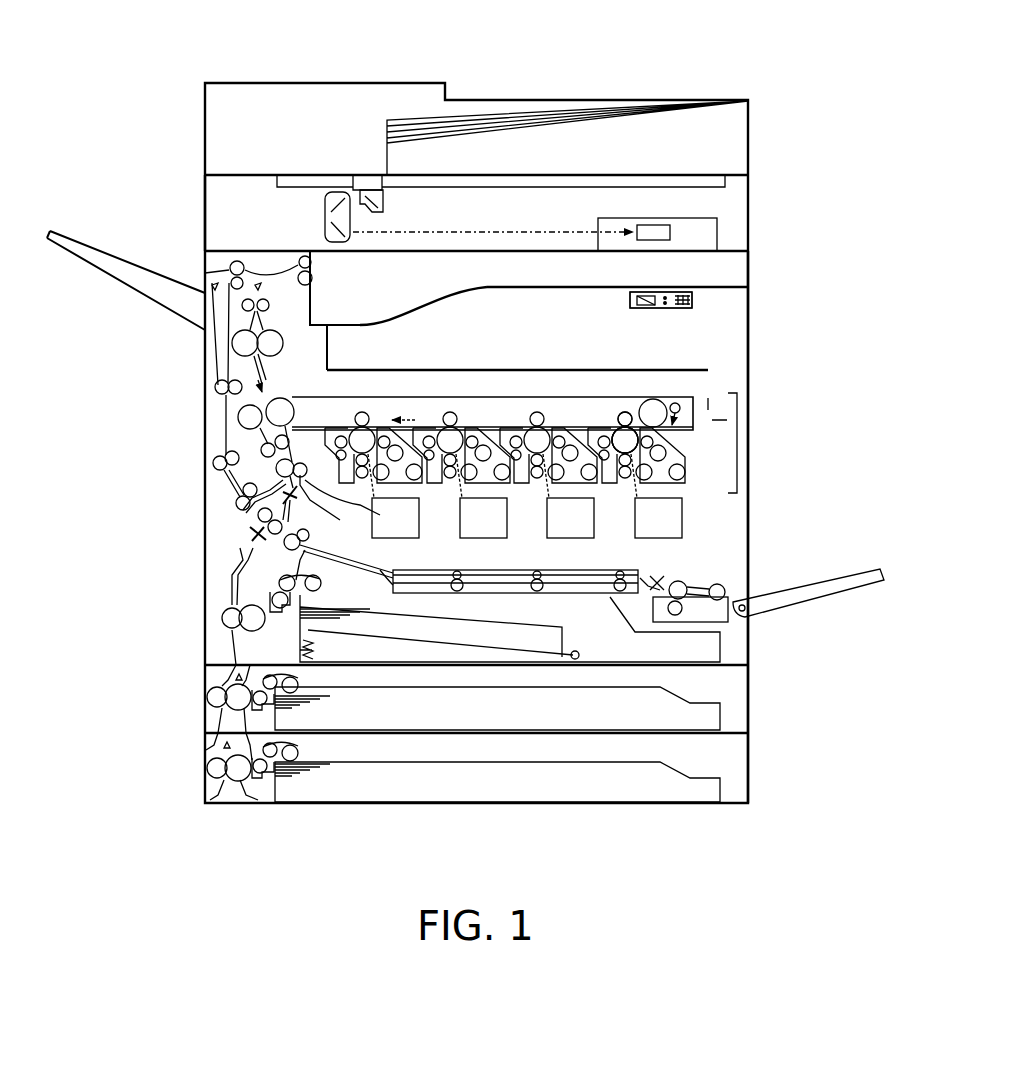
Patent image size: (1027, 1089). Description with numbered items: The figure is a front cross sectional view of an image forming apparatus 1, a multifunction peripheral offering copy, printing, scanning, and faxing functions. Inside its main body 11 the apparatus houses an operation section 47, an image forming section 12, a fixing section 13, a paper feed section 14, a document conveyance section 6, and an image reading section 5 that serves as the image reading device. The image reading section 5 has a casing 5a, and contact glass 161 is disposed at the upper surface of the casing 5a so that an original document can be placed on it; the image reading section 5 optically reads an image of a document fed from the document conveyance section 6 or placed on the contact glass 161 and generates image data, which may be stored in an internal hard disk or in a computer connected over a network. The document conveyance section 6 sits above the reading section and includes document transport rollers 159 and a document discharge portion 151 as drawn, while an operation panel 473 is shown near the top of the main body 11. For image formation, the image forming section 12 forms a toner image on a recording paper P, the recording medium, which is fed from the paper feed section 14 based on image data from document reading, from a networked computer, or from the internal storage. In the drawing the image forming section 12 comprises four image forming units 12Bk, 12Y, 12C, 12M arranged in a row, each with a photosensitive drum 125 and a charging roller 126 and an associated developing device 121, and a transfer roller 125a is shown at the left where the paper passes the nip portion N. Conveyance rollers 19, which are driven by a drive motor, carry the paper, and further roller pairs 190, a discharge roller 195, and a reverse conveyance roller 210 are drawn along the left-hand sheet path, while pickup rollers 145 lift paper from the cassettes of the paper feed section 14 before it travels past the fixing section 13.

The image forming apparatus 1 is at (825, 158).
The image reading section 5 is at (187, 207).
The casing 5a is at (205, 188).
The document conveyance section 6 is at (597, 88).
The contact glass 161 is at (616, 186).
The document transport roller 159 is at (311, 262).
The document discharge portion 151 is at (347, 325).
The operation panel 473 is at (633, 300).
The main body 11 is at (752, 312).
The operation section 47 is at (694, 302).
The fixing section 13 is at (227, 345).
The nip portion N is at (230, 388).
The transfer roller 125a is at (300, 383).
The black image forming unit 12Bk is at (372, 417).
The yellow image forming unit 12Y is at (448, 415).
The cyan image forming unit 12C is at (540, 415).
The magenta image forming unit 12M is at (623, 405).
The photosensitive drum 125 is at (630, 408).
The charging roller 126 is at (624, 412).
The image forming section 12 is at (561, 438).
The discharge roller 195 is at (233, 394).
The conveyance roller pair 190 is at (222, 416).
The reverse conveyance roller 210 is at (214, 464).
The conveyance rollers 19 is at (297, 496).
The developing device 121 is at (627, 457).
The pickup roller 145 is at (263, 745).
The recording paper P is at (556, 613).
The paper feed section 14 is at (730, 690).